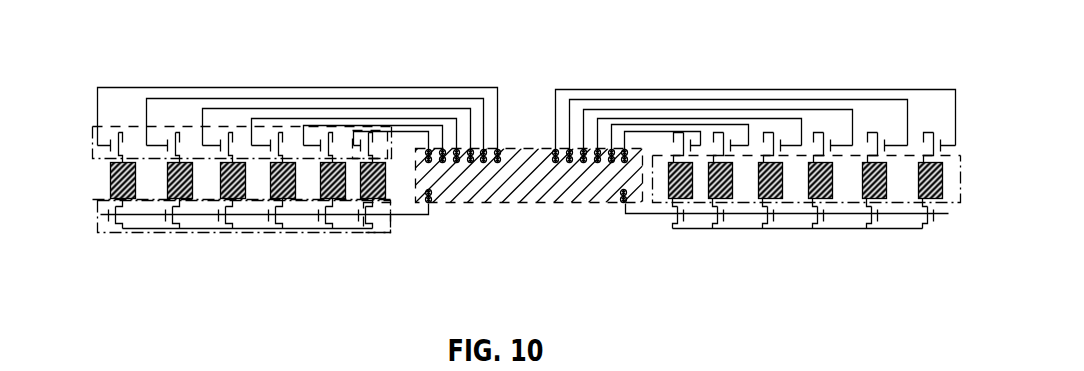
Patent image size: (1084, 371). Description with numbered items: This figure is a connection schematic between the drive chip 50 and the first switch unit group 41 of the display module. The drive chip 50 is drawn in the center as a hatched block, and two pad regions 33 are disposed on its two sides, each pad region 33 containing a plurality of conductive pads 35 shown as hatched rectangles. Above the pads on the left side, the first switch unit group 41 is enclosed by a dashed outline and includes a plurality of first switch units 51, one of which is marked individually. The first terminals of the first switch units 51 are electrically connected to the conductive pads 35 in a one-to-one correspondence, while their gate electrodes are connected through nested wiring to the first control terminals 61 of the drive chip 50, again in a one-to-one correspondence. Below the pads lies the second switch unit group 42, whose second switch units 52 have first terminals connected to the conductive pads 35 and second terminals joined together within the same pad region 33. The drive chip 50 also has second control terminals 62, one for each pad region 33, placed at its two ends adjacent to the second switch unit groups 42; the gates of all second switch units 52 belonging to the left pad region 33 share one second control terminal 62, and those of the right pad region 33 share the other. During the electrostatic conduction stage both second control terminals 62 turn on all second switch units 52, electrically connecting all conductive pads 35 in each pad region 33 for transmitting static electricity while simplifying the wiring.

The pad region 33 is at (652, 202).
The conductive pad 35 is at (110, 193).
The first switch unit group 41 is at (255, 114).
The second switch unit group 42 is at (263, 237).
The drive chip 50 is at (535, 203).
The first switch unit 51 is at (367, 130).
The second switch unit 52 is at (370, 232).
The first control terminal 61 is at (497, 148).
The second control terminal 62 is at (433, 203).